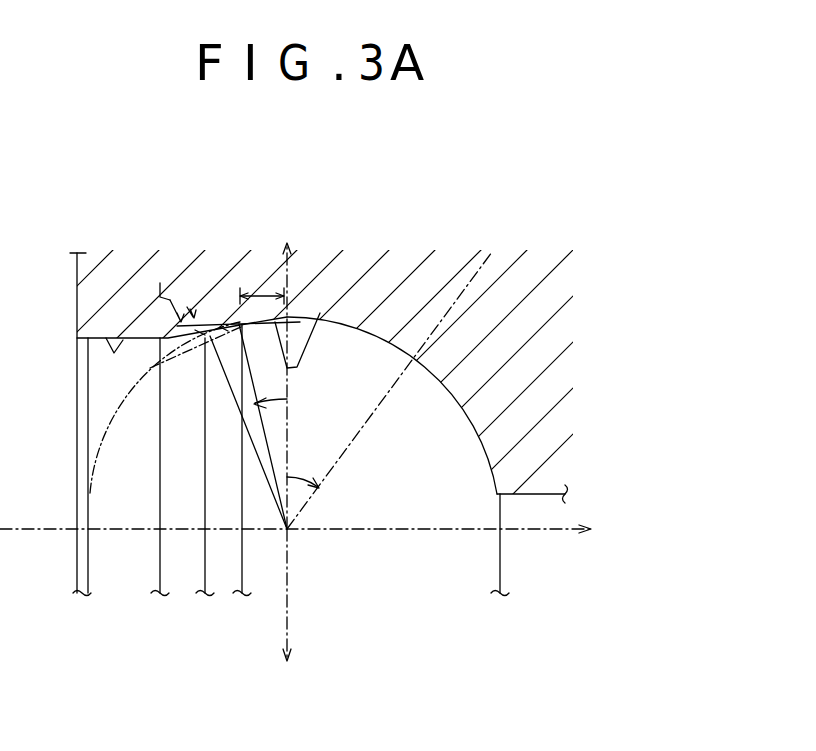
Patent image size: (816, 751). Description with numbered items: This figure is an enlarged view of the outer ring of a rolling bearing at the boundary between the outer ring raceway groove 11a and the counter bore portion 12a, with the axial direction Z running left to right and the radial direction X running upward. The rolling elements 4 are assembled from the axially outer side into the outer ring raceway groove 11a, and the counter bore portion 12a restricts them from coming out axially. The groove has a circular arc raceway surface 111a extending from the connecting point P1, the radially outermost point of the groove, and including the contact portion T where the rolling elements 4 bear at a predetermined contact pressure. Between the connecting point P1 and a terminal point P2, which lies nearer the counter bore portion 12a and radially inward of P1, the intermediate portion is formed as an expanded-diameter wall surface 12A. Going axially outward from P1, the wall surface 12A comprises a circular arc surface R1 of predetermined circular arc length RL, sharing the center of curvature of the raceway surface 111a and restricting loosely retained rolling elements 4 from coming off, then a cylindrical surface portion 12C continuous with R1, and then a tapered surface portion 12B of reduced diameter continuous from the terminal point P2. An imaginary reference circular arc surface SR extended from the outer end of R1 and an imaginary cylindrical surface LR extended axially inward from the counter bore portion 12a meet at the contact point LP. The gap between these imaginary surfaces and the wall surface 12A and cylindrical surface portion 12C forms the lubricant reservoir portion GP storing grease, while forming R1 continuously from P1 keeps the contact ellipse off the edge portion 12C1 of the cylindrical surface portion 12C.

The raceway surface 111a is at (443, 374).
The outer ring raceway groove 11a is at (403, 472).
The rolling element 4 is at (110, 437).
The reference circular arc surface SR is at (120, 408).
The radial direction X is at (295, 445).
The axial direction Z is at (308, 529).
The contact portion T is at (418, 362).
The circular arc surface R1 is at (323, 318).
The connecting point P1 is at (290, 319).
The counter bore portion 12a is at (113, 350).
The terminal point P2 is at (158, 338).
The lubricant reservoir portion GP is at (172, 342).
The wall surface 12A is at (222, 338).
The edge portion 12C1 is at (236, 326).
The circular arc length RL is at (278, 323).
The contact point LP is at (190, 338).
The imaginary cylindrical surface LR is at (232, 340).
The tapered surface portion 12B is at (173, 338).
The cylindrical surface portion 12C is at (208, 340).